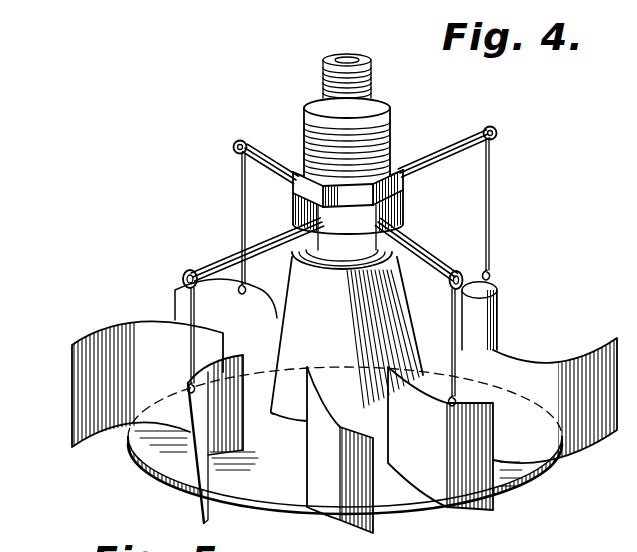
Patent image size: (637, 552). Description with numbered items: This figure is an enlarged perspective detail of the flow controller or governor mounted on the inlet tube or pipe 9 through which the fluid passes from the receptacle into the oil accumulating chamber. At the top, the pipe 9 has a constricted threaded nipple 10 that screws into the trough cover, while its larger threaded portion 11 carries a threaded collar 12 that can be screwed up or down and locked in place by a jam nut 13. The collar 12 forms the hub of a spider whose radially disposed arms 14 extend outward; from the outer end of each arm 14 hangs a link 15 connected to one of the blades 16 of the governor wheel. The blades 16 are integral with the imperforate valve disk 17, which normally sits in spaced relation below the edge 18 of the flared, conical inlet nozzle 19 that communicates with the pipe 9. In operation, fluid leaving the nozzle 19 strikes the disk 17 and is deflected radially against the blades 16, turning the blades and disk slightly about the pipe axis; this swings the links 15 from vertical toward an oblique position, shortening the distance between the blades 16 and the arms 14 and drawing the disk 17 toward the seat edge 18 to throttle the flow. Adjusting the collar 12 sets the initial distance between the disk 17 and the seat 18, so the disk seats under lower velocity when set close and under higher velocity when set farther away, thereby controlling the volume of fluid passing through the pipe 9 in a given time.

The inlet tube or pipe 9 is at (379, 97).
The constricted threaded nipple 10 is at (322, 73).
The larger threaded portion 11 is at (392, 142).
The threaded collar 12 is at (408, 206).
The jam nut 13 is at (291, 190).
The radially disposed arms 14 is at (436, 256).
The links 15 is at (178, 310).
The blades 16 is at (80, 373).
The imperforate valve disk 17 is at (292, 493).
The edge of the flared inlet nozzle 18 is at (287, 415).
The flared inlet nozzle 19 is at (367, 403).